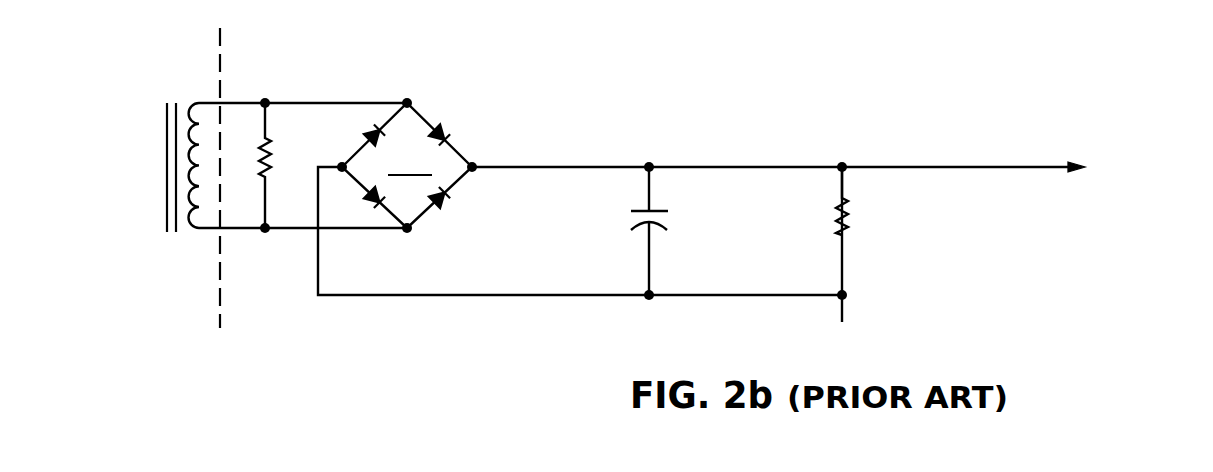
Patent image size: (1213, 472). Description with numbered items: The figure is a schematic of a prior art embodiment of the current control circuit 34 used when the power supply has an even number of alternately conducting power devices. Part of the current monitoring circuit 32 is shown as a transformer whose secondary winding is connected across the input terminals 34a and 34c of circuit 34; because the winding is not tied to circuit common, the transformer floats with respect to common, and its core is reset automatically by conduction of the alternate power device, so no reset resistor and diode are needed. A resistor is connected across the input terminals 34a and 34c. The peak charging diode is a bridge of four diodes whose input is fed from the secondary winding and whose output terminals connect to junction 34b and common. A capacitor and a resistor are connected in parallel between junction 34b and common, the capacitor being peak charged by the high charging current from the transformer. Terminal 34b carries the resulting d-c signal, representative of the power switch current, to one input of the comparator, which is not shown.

The current monitoring circuit 32 is at (169, 128).
The current control circuit 34 is at (575, 72).
The input terminal 34a is at (266, 87).
The junction 34b is at (861, 150).
The input terminal 34c is at (269, 244).